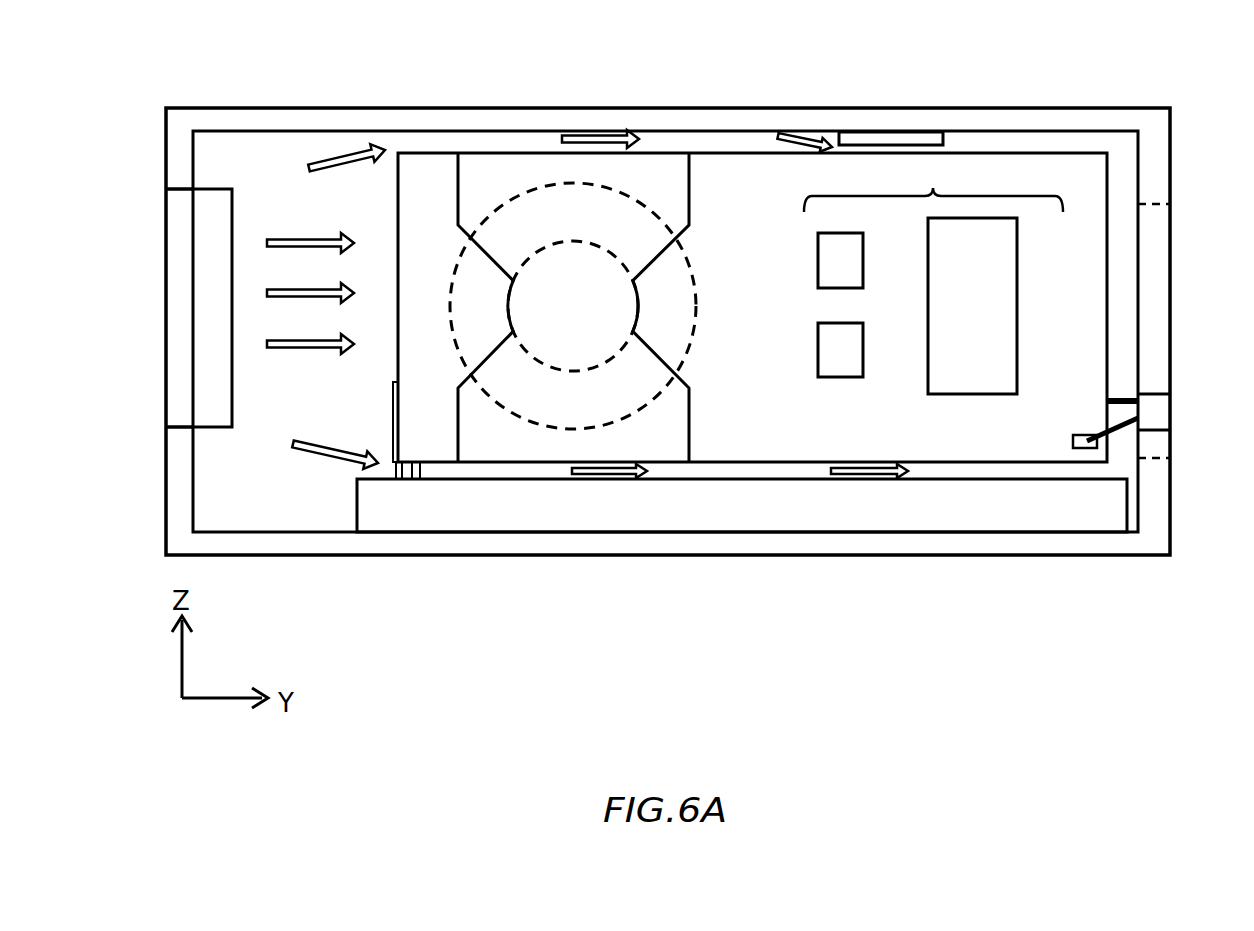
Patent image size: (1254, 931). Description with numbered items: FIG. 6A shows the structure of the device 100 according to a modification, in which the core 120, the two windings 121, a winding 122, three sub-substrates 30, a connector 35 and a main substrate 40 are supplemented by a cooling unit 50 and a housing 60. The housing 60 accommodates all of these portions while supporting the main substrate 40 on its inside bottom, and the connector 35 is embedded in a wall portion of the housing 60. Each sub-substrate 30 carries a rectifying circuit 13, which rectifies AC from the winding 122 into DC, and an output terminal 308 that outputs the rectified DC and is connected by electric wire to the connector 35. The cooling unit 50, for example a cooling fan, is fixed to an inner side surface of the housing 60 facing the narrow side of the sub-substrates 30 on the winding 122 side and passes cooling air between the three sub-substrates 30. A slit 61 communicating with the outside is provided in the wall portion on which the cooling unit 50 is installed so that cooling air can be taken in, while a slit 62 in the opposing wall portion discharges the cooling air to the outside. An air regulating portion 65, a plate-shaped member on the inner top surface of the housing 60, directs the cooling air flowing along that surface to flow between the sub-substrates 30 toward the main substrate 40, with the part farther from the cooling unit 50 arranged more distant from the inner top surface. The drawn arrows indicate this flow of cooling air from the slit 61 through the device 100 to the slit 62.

The device 100 is at (435, 84).
The housing 60 is at (683, 555).
The main substrate 40 is at (556, 532).
The cooling unit 50 is at (232, 430).
The slit 61 is at (185, 190).
The slit 62 is at (1165, 204).
The sub-substrate 30 is at (1069, 151).
The air regulating portion 65 is at (932, 132).
The rectifying circuit 13 is at (933, 273).
The core 120 is at (689, 418).
The winding 121 is at (695, 279).
The winding 122 is at (651, 306).
The connector 35 is at (1160, 393).
The output terminal 308 is at (1073, 441).